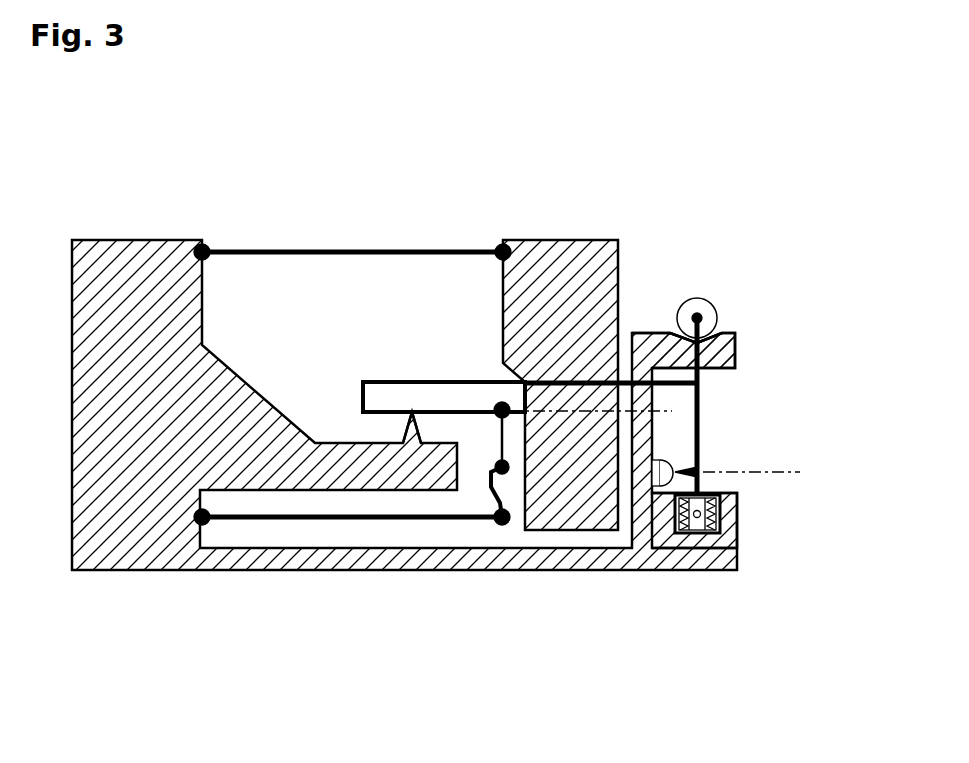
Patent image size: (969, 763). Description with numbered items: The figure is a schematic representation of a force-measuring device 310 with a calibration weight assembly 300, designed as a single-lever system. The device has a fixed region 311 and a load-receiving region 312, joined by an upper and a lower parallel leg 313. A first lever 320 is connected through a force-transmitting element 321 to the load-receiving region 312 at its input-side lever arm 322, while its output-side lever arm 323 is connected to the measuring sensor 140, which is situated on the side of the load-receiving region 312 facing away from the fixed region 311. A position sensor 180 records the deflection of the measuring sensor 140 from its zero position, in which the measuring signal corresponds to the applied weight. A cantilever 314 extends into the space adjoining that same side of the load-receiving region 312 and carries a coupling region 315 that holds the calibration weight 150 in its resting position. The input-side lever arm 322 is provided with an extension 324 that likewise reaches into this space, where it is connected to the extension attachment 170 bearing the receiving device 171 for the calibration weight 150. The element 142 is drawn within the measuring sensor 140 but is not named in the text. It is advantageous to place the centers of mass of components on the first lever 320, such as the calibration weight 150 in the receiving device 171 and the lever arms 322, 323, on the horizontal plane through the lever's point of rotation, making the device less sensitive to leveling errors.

The calibration weight assembly 300 is at (758, 238).
The force-measuring device 310 is at (290, 162).
The fixed region 311 is at (182, 437).
The load-receiving region 312 is at (533, 309).
The parallel leg 313 is at (245, 250).
The cantilever 314 is at (723, 345).
The coupling region 315 is at (673, 325).
The first lever 320 is at (430, 376).
The force-transmitting element 321 is at (520, 440).
The input-side lever arm 322 is at (473, 417).
The output-side lever arm 323 is at (395, 415).
The extension 324 is at (590, 386).
The calibration weight 150 is at (697, 316).
The extension attachment 170 is at (700, 410).
The receiving device 171 is at (704, 318).
The position sensor 180 is at (712, 458).
The measuring sensor 140 is at (748, 527).
The spring 142 is at (664, 535).